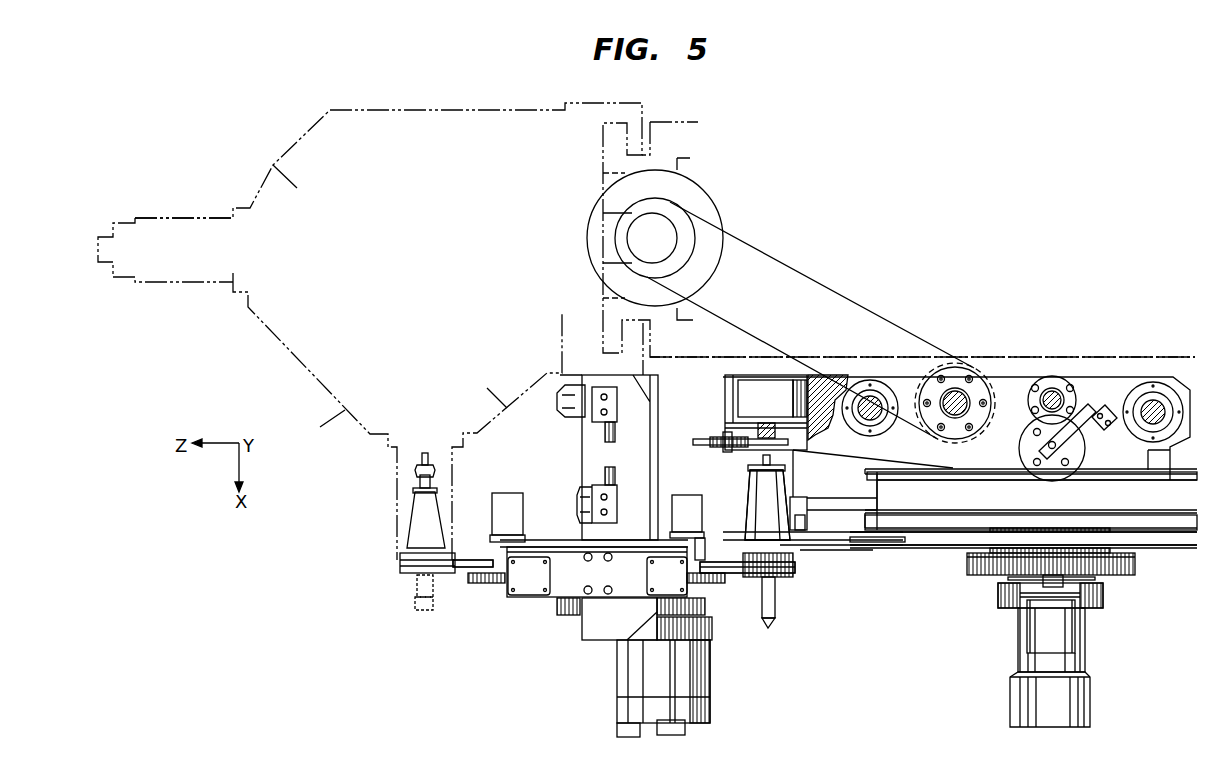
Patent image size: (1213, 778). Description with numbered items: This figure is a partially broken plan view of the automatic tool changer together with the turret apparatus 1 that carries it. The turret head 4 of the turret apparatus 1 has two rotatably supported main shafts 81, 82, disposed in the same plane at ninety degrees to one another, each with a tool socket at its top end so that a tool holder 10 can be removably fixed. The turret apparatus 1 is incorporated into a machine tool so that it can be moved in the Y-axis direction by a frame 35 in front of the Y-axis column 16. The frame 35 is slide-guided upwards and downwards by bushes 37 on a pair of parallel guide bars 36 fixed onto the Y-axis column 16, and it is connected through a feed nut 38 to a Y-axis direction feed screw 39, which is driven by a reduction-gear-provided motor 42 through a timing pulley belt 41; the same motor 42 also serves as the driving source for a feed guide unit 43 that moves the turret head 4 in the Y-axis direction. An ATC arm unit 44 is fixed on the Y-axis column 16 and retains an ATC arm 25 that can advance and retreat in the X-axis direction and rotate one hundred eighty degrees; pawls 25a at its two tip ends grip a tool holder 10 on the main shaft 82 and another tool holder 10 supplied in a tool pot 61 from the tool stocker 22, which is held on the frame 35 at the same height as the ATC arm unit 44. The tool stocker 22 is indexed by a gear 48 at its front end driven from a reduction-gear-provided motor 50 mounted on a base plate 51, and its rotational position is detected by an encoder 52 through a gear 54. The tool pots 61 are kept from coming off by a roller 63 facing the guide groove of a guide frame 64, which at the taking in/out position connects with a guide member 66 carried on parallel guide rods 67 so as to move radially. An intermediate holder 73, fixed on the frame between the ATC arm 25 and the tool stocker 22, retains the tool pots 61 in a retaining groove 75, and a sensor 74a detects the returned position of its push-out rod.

The turret apparatus 1 is at (536, 701).
The turret head 4 is at (258, 320).
The tool holder 10 is at (115, 276).
The Y-axis column 16 is at (1147, 363).
The tool stocker 22 is at (925, 553).
The ATC arm 25 is at (502, 583).
The pawls 25a is at (452, 563).
The frame 35 is at (1093, 378).
The guide bars 36 is at (877, 413).
The bushes 37 is at (1160, 430).
The feed nut 38 is at (967, 432).
The Y-axis direction feed screw 39 is at (968, 404).
The timing pulley belt 41 is at (862, 300).
The reduction-gear-provided motor 42 is at (719, 209).
The feed guide unit 43 is at (678, 252).
The ATC arm unit 44 is at (578, 629).
The gear 48 is at (1137, 563).
The reduction-gear-provided motor 50 is at (1018, 660).
The base plate 51 is at (1103, 592).
The encoder 52 is at (1072, 630).
The gear 54 is at (1007, 578).
The tool pot 61 is at (750, 490).
The roller 63 is at (807, 518).
The guide frame 64 is at (877, 493).
The guide member 66 is at (800, 497).
The guide rods 67 is at (823, 500).
The intermediate holder 73 is at (723, 473).
The sensor 74a is at (723, 435).
The retaining groove 75 is at (717, 533).
The main shaft 81 is at (168, 218).
The main shaft 82 is at (397, 535).